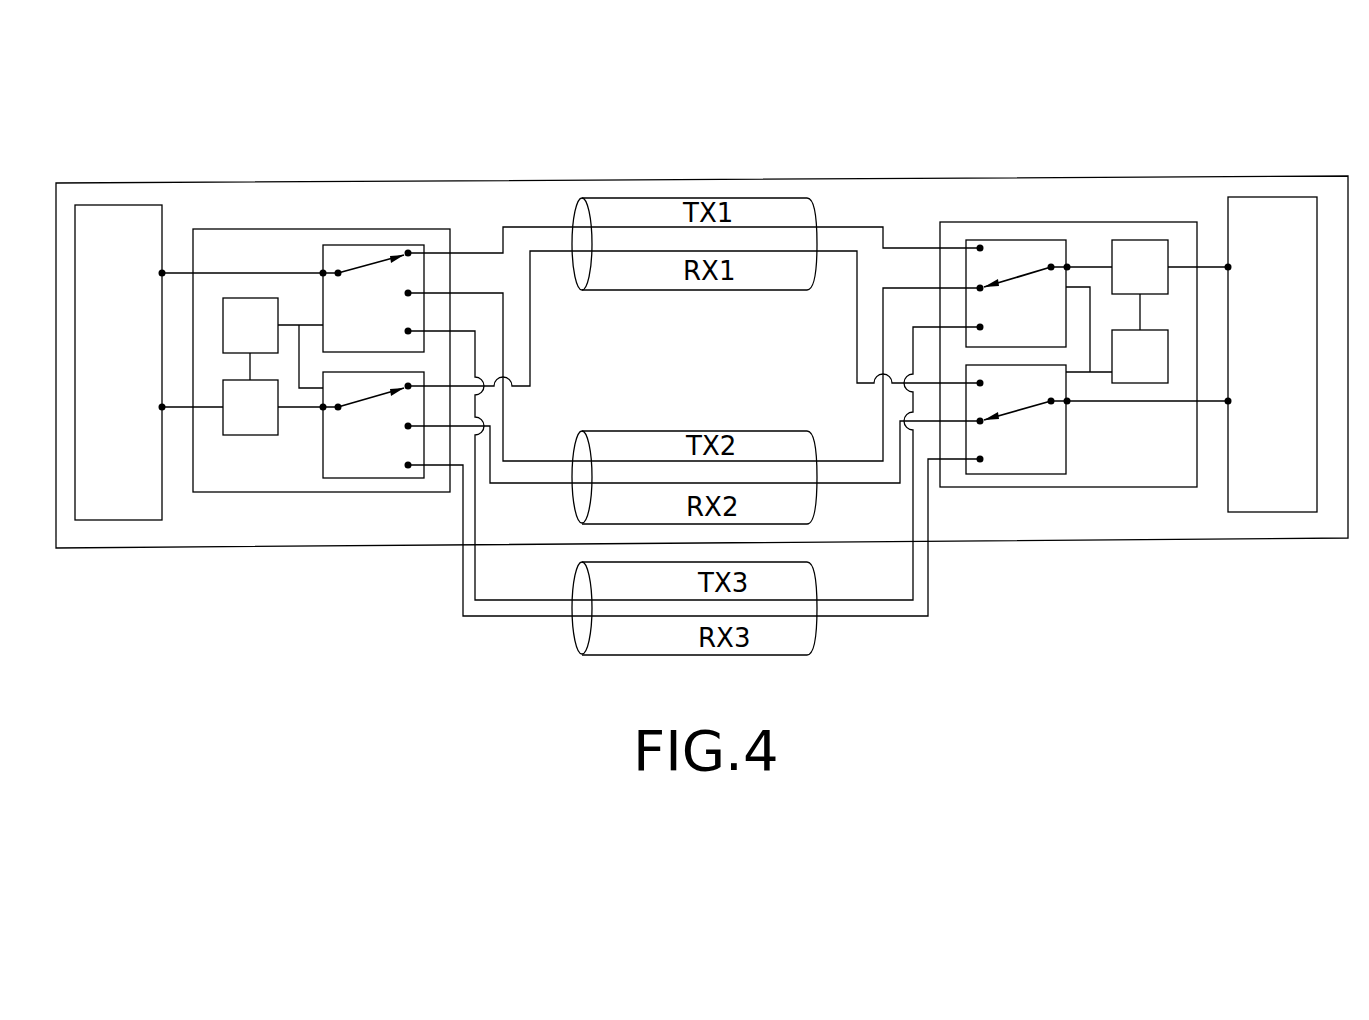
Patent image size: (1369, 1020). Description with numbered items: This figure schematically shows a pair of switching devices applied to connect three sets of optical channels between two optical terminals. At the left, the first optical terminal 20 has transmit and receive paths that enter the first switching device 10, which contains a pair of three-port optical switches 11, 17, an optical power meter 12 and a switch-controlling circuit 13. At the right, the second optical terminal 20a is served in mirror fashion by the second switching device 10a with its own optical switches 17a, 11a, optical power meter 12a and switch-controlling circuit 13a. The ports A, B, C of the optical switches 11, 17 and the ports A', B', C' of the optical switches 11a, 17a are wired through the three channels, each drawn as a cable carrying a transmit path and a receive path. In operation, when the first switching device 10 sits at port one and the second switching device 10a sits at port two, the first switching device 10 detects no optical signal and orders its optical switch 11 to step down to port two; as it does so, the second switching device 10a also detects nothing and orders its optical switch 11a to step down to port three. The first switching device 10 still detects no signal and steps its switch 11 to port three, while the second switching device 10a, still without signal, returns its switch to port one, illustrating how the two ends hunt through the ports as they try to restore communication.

The first switching device 10 is at (300, 229).
The optical switch 11 is at (360, 245).
The optical power meter 12 is at (250, 432).
The switch-controlling circuit 13 is at (238, 298).
The optical switch 17 is at (365, 470).
The first optical terminal 20 is at (122, 510).
The second switching device 10a is at (1079, 222).
The optical switch 11a is at (1024, 472).
The optical power meter 12a is at (1140, 240).
The switch-controlling circuit 13a is at (1140, 383).
The optical switch 17a is at (1017, 240).
The second optical terminal 20a is at (1277, 503).